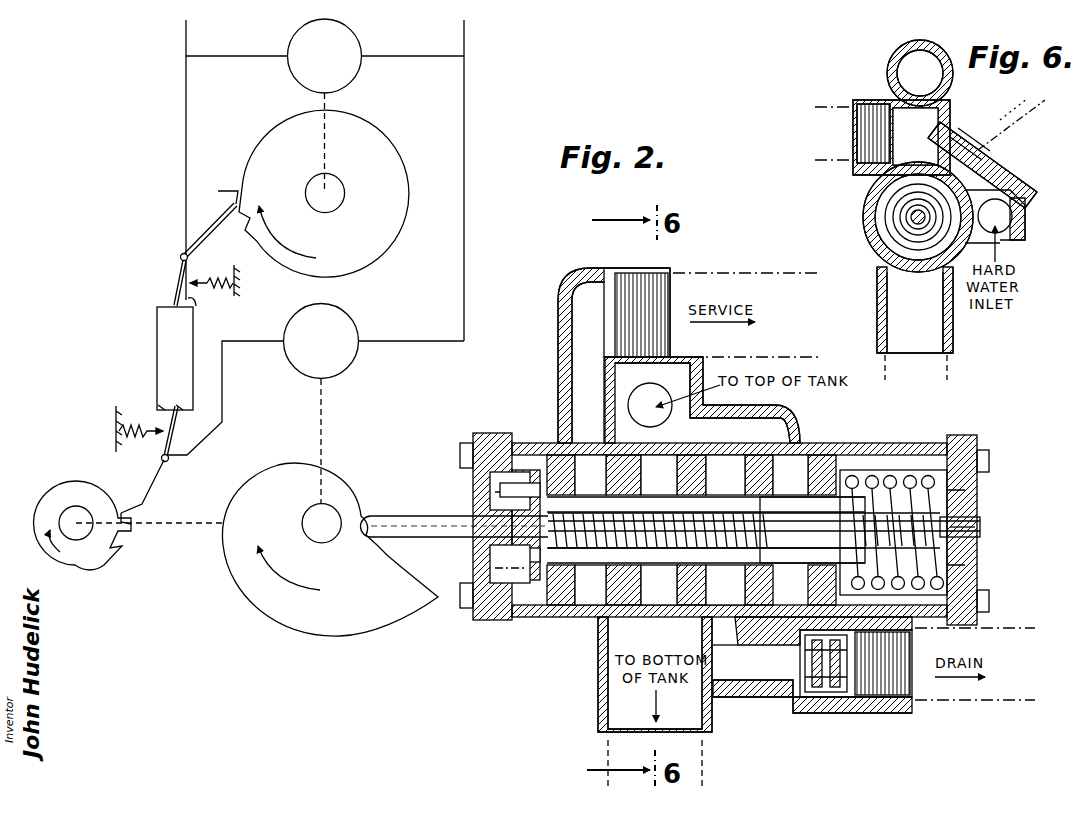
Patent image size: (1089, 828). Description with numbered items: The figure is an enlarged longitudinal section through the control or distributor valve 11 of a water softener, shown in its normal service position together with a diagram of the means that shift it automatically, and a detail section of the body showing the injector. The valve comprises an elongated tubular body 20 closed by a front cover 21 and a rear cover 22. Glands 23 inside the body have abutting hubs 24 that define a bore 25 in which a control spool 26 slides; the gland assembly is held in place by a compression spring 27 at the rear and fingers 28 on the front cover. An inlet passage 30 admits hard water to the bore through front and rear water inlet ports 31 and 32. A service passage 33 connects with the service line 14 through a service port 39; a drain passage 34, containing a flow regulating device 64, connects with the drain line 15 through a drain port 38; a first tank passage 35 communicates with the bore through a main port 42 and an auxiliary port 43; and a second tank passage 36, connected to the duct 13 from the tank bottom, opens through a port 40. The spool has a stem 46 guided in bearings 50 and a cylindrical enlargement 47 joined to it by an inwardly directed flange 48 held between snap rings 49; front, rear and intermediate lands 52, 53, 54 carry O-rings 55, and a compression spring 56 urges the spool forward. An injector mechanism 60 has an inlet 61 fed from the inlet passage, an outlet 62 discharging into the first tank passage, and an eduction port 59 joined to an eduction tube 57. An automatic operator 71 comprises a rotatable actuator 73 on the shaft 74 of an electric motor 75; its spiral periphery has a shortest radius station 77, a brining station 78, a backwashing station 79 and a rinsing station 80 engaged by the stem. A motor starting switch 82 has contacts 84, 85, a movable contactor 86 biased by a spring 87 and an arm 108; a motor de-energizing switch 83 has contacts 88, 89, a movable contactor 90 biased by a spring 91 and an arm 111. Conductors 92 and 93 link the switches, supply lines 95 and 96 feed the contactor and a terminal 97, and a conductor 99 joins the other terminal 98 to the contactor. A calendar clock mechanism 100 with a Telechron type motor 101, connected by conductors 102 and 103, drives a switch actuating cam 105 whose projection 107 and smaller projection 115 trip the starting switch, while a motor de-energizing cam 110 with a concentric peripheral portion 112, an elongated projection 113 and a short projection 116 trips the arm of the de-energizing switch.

In FIG. 2, the control or distributor valve 11 is at (506, 662).
In FIG. 2, the duct 13 is at (706, 770).
In FIG. 6, the duct 13 is at (958, 380).
In FIG. 2, the service line 14 is at (699, 272).
In FIG. 2, the drain line 15 is at (950, 705).
In FIG. 2, the body 20 is at (866, 455).
In FIG. 6, the body 20 is at (863, 222).
In FIG. 2, the front cover 21 is at (465, 478).
In FIG. 2, the rear cover 22 is at (975, 500).
In FIG. 2, the glands 23 is at (735, 458).
In FIG. 2, the hubs 24 is at (592, 605).
In FIG. 6, the hubs 24 is at (893, 212).
In FIG. 2, the bore 25 is at (860, 470).
In FIG. 6, the bore 25 is at (905, 225).
In FIG. 2, the control spool 26 is at (648, 470).
In FIG. 6, the control spool 26 is at (900, 205).
In FIG. 2, the compression spring 27 is at (908, 475).
In FIG. 2, the fingers 28 is at (490, 491).
In FIG. 6, the inlet passage 30 is at (1010, 192).
In FIG. 2, the front water inlet port 31 is at (478, 566).
In FIG. 2, the rear water inlet port 32 is at (975, 560).
In FIG. 2, the service passage 33 is at (572, 313).
In FIG. 6, the service passage 33 is at (912, 52).
In FIG. 2, the drain passage 34 is at (732, 680).
In FIG. 2, the first tank passage 35 is at (685, 368).
In FIG. 6, the first tank passage 35 is at (905, 122).
In FIG. 2, the second tank passage 36 is at (608, 690).
In FIG. 6, the second tank passage 36 is at (903, 300).
In FIG. 2, the drain port 38 is at (725, 585).
In FIG. 2, the service port 39 is at (598, 443).
In FIG. 2, the port 40 is at (659, 585).
In FIG. 2, the main port 42 is at (790, 475).
In FIG. 2, the auxiliary port 43 is at (812, 529).
In FIG. 2, the stem 46 is at (430, 521).
In FIG. 2, the cylindrical enlargement 47 is at (590, 585).
In FIG. 2, the inwardly directed flange 48 is at (538, 503).
In FIG. 2, the snap rings 49 is at (538, 548).
In FIG. 2, the bearings 50 is at (490, 543).
In FIG. 2, the front land 52 is at (590, 475).
In FIG. 2, the rear land 53 is at (725, 475).
In FIG. 2, the intermediate land 54 is at (659, 475).
In FIG. 2, the O-rings 55 is at (765, 551).
In FIG. 2, the compression spring 56 is at (815, 551).
In FIG. 6, the eduction tube 57 is at (1003, 100).
In FIG. 6, the eduction port 59 is at (1015, 132).
In FIG. 6, the injector mechanism 60 is at (975, 145).
In FIG. 6, the inlet 61 is at (1000, 172).
In FIG. 6, the outlet 62 is at (925, 135).
In FIG. 2, the flow regulating device 64 is at (805, 678).
In FIG. 2, the automatic operator 71 is at (220, 604).
In FIG. 2, the rotatable actuator 73 is at (286, 612).
In FIG. 2, the shaft 74 is at (327, 503).
In FIG. 2, the electric motor 75 is at (348, 315).
In FIG. 2, the station 77 is at (362, 514).
In FIG. 2, the brining station 78 is at (225, 500).
In FIG. 2, the backwashing station 79 is at (430, 605).
In FIG. 2, the rinsing station 80 is at (400, 571).
In FIG. 2, the motor starting switch 82 is at (167, 268).
In FIG. 2, the motor de-energizing switch 83 is at (137, 409).
In FIG. 2, the stationary contact 84 is at (172, 302).
In FIG. 2, the stationary contact 85 is at (197, 304).
In FIG. 2, the movable contactor 86 is at (190, 276).
In FIG. 2, the spring 87 is at (234, 296).
In FIG. 2, the stationary contact 88 is at (160, 404).
In FIG. 2, the stationary contact 89 is at (179, 411).
In FIG. 2, the movable contactor 90 is at (162, 459).
In FIG. 2, the spring 91 is at (116, 407).
In FIG. 2, the conductor 92 is at (155, 324).
In FIG. 2, the conductor 93 is at (192, 346).
In FIG. 2, the supply line 95 is at (184, 125).
In FIG. 2, the supply line 96 is at (466, 126).
In FIG. 2, the terminal 97 is at (354, 350).
In FIG. 2, the terminal 98 is at (284, 361).
In FIG. 2, the conductor 99 is at (238, 342).
In FIG. 2, the calendar clock mechanism 100 is at (377, 95).
In FIG. 2, the Telechron type motor 101 is at (355, 41).
In FIG. 2, the conductor 102 is at (223, 56).
In FIG. 2, the conductor 103 is at (409, 56).
In FIG. 2, the switch actuating cam 105 is at (294, 116).
In FIG. 2, the projection 107 is at (260, 196).
In FIG. 2, the arm 108 is at (209, 218).
In FIG. 2, the motor de-energizing cam 110 is at (88, 580).
In FIG. 2, the arm 111 is at (155, 490).
In FIG. 2, the concentric peripheral portion 112 is at (88, 486).
In FIG. 2, the projection 113 is at (110, 558).
In FIG. 2, the projection 115 is at (248, 246).
In FIG. 2, the projection 116 is at (131, 531).